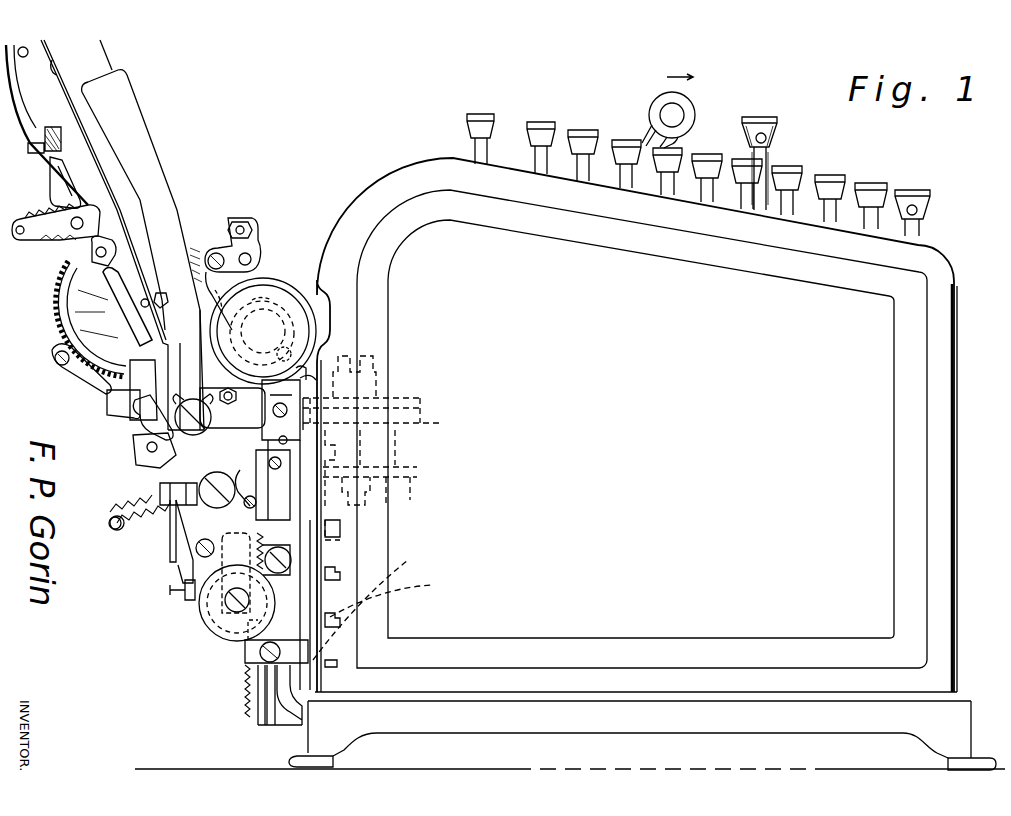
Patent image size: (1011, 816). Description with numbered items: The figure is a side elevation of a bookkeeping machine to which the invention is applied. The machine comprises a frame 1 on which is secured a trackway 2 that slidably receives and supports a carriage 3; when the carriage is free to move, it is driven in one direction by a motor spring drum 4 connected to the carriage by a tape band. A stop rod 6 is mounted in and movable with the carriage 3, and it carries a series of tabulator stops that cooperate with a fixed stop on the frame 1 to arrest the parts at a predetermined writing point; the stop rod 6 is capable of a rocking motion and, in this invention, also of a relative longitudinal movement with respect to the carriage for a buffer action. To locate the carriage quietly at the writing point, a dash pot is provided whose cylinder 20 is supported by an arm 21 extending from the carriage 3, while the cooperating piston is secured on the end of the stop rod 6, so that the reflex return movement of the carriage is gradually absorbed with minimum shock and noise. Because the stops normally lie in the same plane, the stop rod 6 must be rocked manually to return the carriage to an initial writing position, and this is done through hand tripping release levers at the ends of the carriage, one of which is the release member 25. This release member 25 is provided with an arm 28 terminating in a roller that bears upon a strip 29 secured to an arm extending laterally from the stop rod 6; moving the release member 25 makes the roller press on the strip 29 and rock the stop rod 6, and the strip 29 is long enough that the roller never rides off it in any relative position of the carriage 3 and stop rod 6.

The frame 1 is at (380, 388).
The trackway 2 is at (300, 520).
The carriage 3 is at (263, 411).
The motor spring drum 4 is at (418, 419).
The stop rod 6 is at (223, 613).
The cylinder 20 is at (228, 638).
The arm 21 is at (227, 568).
The hand tripping release lever 25 is at (168, 206).
The arm 28 is at (185, 551).
The strip 29 is at (238, 572).